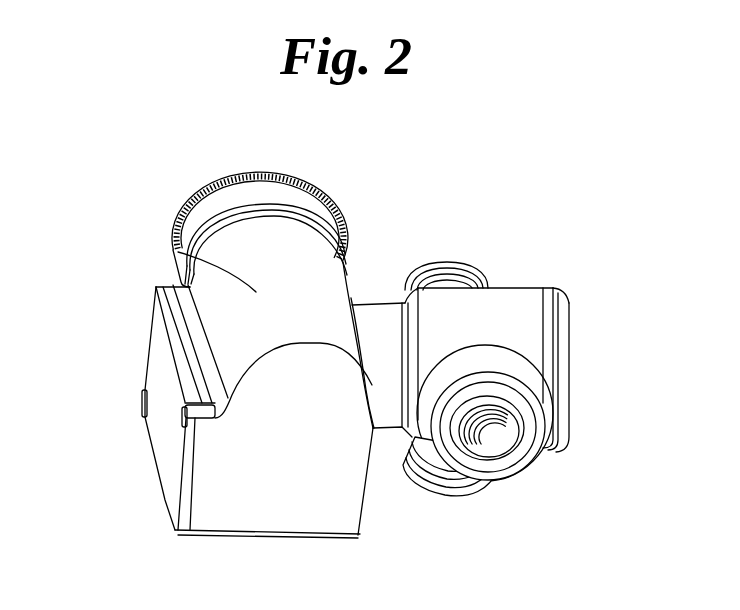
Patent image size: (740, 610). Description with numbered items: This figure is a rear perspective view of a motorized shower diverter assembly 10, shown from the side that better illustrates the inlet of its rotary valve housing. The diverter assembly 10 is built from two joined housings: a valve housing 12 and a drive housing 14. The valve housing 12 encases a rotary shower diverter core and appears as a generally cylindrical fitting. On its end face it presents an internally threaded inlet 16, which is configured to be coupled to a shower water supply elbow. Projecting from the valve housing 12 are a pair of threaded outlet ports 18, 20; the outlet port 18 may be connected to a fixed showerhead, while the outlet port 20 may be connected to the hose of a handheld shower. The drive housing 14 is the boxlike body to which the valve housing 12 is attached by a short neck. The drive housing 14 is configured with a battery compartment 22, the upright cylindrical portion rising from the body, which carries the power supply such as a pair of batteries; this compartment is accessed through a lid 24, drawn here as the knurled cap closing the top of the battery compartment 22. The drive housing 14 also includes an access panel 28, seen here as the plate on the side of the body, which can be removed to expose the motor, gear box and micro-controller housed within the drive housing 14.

The motorized shower diverter assembly 10 is at (436, 165).
The valve housing 12 is at (507, 303).
The drive housing 14 is at (255, 513).
The internally threaded inlet 16 is at (503, 440).
The threaded outlet port 18 is at (455, 263).
The threaded outlet port 20 is at (450, 497).
The battery compartment 22 is at (178, 252).
The lid 24 is at (210, 192).
The access panel 28 is at (167, 430).